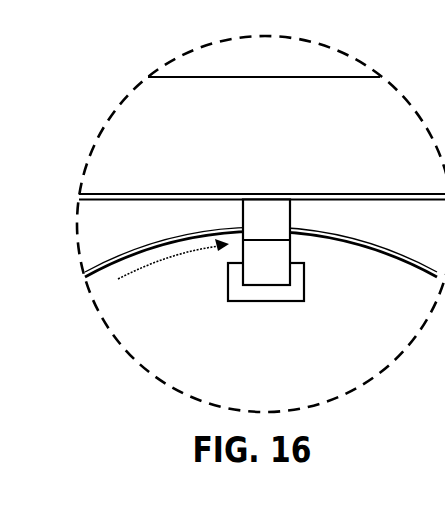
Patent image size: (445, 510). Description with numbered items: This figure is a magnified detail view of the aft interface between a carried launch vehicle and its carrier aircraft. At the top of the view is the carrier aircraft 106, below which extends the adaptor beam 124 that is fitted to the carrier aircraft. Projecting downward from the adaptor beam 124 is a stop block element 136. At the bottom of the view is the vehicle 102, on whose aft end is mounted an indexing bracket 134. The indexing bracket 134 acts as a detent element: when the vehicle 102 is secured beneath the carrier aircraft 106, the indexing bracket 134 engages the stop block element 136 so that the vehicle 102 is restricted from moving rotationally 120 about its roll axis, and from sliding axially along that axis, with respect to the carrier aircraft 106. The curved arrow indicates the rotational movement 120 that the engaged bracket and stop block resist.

The vehicle 102 is at (243, 365).
The carrier aircraft 106 is at (283, 66).
The rotational movement 120 is at (165, 262).
The adaptor beam 124 is at (245, 148).
The indexing bracket 134 is at (304, 283).
The stop block element 136 is at (282, 249).